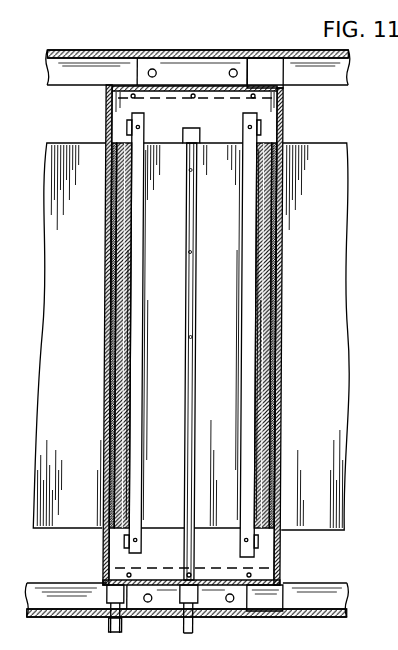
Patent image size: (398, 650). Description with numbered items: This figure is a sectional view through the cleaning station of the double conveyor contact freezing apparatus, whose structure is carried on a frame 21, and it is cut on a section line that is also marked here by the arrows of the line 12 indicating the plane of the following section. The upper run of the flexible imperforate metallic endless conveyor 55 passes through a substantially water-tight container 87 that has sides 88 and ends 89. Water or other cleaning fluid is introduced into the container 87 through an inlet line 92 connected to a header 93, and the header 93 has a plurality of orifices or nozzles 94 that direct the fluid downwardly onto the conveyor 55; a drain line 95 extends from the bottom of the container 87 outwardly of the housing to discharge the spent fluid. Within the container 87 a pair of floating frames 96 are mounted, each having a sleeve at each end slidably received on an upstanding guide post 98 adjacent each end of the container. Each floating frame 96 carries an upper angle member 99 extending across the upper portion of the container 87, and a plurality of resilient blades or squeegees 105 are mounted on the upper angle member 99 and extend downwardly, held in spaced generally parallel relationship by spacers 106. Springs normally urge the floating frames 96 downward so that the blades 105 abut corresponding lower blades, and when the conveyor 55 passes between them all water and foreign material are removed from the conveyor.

The frame 21 is at (66, 75).
The ends 89 is at (258, 88).
The container 87 is at (193, 335).
The sides 88 is at (283, 388).
The resilient blades or squeegees 105 is at (191, 335).
The spacers 106 is at (111, 173).
The endless conveyor 55 is at (347, 329).
The floating frames 96 is at (194, 335).
The upper angle member 99 is at (238, 283).
The header 93 is at (187, 354).
The orifices or nozzles 94 is at (191, 338).
The guide post 98 is at (248, 128).
The drain line 95 is at (110, 623).
The inlet line 92 is at (197, 628).
The section line 12- 12 is at (64, 565).